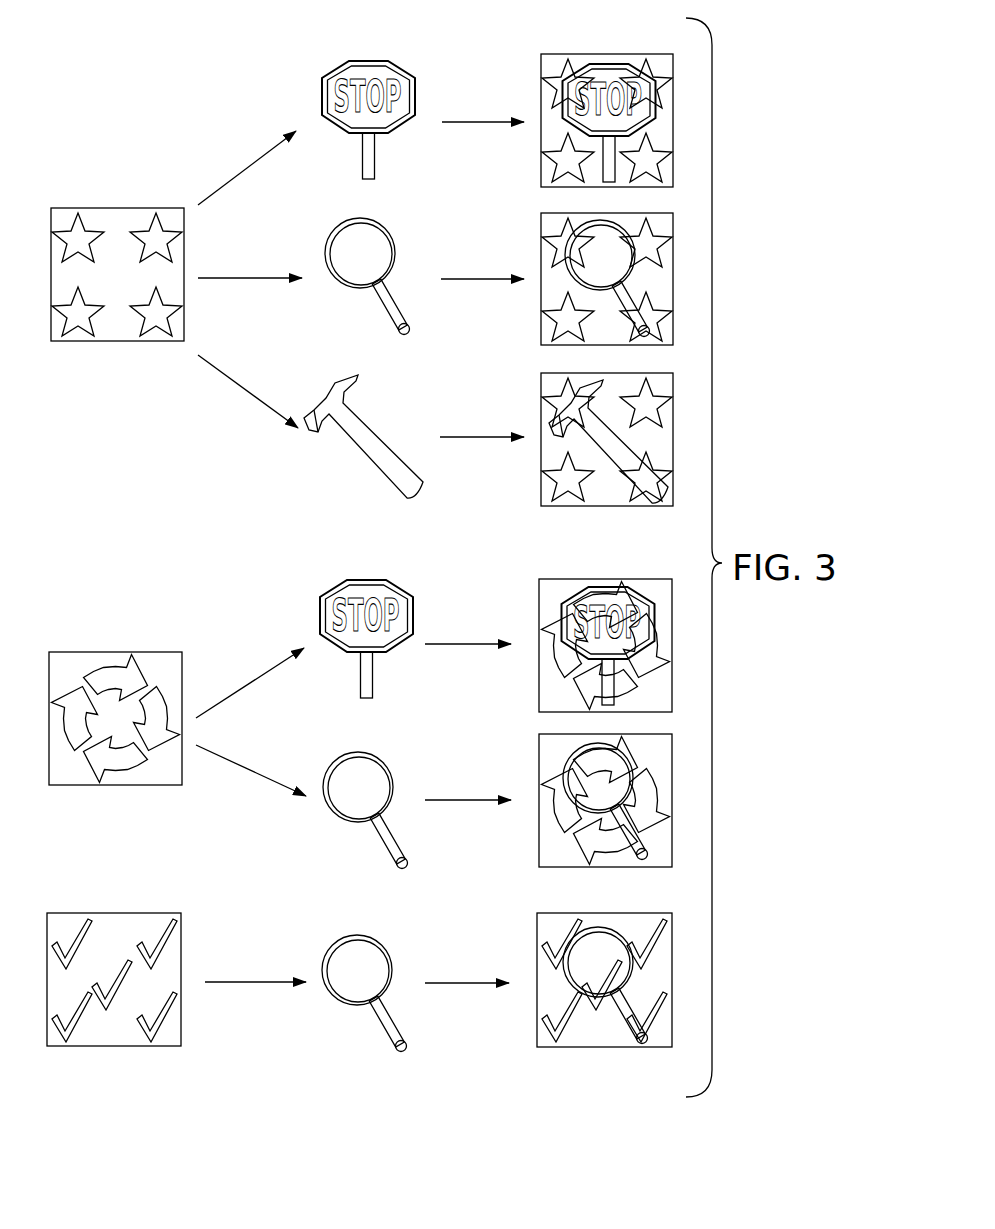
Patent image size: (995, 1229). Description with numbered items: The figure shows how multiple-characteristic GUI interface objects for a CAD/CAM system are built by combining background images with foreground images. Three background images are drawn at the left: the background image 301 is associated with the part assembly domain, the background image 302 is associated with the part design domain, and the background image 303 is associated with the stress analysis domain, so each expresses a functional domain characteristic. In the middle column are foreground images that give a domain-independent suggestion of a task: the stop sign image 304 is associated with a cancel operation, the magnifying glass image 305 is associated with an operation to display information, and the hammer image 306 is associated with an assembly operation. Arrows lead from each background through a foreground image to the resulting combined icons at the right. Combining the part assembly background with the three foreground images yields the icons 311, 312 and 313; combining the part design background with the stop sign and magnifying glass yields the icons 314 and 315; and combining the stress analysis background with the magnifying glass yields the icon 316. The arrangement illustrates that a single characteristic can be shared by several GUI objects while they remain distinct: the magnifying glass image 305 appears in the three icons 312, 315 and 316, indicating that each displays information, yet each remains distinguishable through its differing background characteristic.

The background image 301 is at (108, 200).
The background image 302 is at (93, 643).
The background image 303 is at (103, 905).
The stop sign image 304 is at (318, 75).
The magnifying glass image 305 is at (320, 245).
The hammer image 306 is at (313, 385).
The multiple characteristic icon 311 is at (522, 72).
The multiple characteristic icon 312 is at (530, 240).
The multiple characteristic icon 313 is at (530, 407).
The multiple characteristic icon 314 is at (525, 605).
The multiple characteristic icon 315 is at (522, 760).
The multiple characteristic icon 316 is at (525, 930).